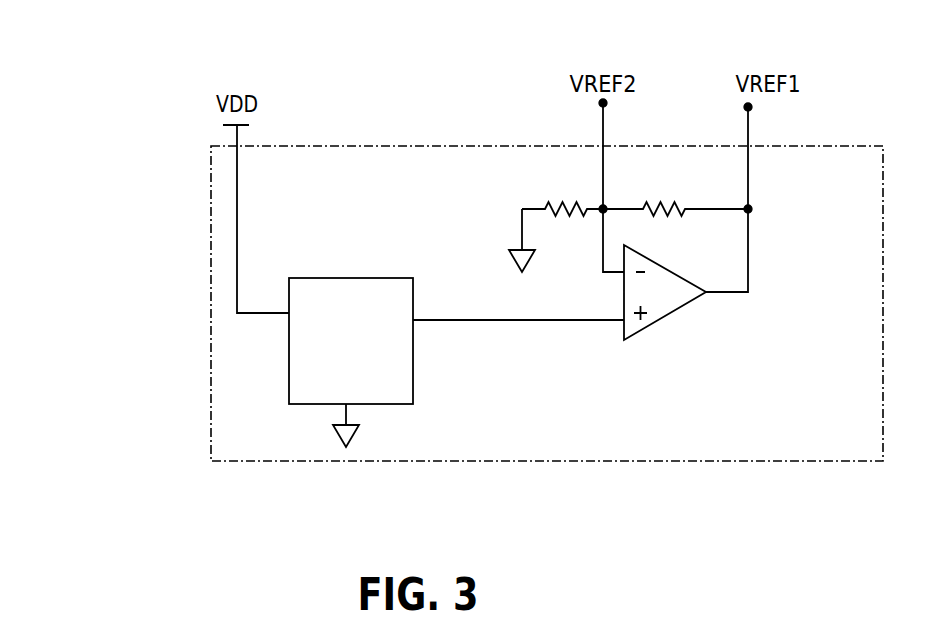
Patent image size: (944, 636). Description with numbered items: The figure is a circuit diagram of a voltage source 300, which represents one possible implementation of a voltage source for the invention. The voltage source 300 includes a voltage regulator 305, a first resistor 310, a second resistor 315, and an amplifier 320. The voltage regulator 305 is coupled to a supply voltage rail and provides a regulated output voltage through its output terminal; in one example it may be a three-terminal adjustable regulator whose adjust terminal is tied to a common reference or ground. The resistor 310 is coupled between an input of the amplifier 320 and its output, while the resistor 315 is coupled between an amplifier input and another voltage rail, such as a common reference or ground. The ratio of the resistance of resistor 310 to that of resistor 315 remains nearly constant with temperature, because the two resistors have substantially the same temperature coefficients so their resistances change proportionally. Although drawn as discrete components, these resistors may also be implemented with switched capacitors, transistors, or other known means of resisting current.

The voltage source 300 is at (211, 172).
The voltage regulator 305 is at (289, 342).
The first resistor 310 is at (686, 197).
The second resistor 315 is at (542, 198).
The amplifier 320 is at (672, 313).